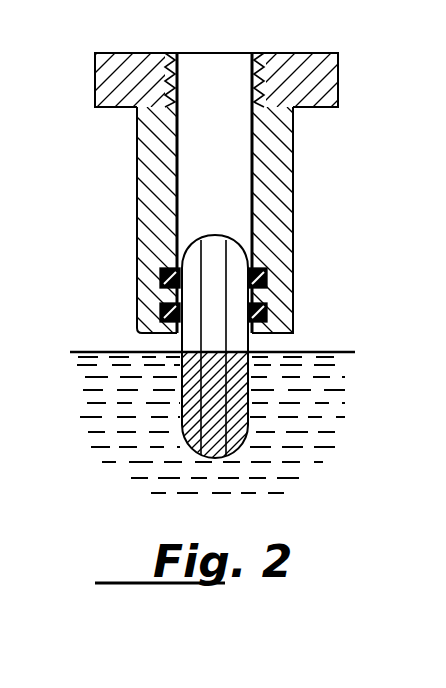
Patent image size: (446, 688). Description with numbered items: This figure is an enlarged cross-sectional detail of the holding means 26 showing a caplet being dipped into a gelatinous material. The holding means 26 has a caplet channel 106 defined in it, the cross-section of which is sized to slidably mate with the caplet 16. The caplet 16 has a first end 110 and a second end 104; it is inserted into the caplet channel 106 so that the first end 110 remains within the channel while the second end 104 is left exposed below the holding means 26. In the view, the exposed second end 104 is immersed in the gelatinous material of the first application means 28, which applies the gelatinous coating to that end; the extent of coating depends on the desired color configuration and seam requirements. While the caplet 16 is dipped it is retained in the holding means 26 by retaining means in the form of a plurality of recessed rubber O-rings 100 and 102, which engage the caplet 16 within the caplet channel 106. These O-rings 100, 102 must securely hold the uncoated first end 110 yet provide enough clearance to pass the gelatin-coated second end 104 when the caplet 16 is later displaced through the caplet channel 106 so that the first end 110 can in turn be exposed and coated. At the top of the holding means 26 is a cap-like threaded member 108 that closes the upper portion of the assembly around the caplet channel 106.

The threaded cap nut 108 is at (325, 53).
The holding means 26 is at (273, 228).
The caplet channel 106 is at (228, 146).
The caplet 16 is at (216, 250).
The first end 110 is at (213, 298).
The second end 104 is at (200, 393).
The O-ring 100 is at (253, 283).
The O-ring 102 is at (262, 313).
The first application means 28 is at (293, 412).